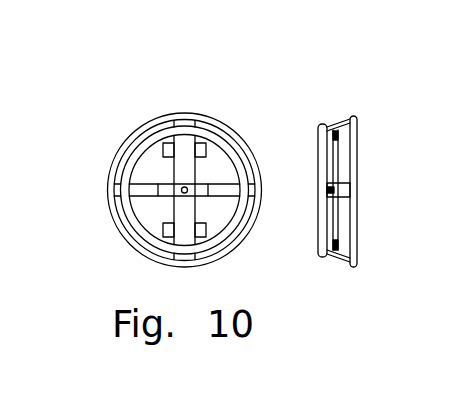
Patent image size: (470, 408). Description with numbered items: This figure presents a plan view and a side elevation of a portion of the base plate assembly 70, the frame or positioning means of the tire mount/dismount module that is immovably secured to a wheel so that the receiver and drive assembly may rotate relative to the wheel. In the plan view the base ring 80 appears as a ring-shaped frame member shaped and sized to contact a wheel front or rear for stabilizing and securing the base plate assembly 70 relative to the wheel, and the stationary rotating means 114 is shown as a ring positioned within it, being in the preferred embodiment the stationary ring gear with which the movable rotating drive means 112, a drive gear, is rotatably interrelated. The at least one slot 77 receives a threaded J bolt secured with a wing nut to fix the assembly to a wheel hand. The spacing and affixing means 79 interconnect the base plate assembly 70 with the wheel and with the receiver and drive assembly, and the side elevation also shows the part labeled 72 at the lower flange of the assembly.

The base plate assembly 70 is at (335, 100).
The bottom connecting flange 72 is at (350, 265).
The slot 77 is at (108, 184).
The spacing and affixing means 79 is at (318, 150).
The base ring 80 is at (196, 113).
The movable rotating drive means 112 is at (126, 226).
The stationary rotating means 114 is at (318, 146).